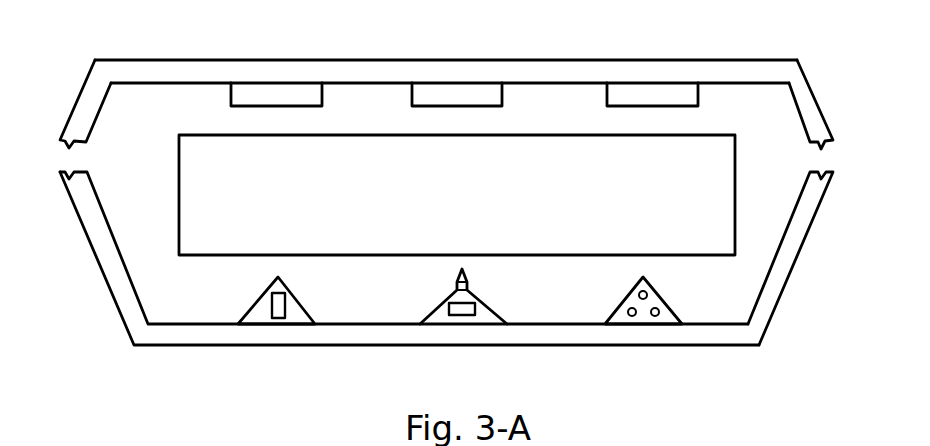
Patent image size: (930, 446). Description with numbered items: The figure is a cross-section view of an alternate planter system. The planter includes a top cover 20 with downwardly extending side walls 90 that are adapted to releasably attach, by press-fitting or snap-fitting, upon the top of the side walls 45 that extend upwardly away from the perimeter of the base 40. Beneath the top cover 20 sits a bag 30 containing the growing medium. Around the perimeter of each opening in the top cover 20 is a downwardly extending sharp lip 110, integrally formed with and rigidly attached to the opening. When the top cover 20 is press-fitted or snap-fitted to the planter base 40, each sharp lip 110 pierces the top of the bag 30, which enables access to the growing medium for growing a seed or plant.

The top cover 20 is at (430, 84).
The bag 30 is at (179, 208).
The base 40 is at (469, 281).
The side walls 45 is at (795, 255).
The side walls 90 is at (78, 95).
The sharp lip 110 is at (698, 106).